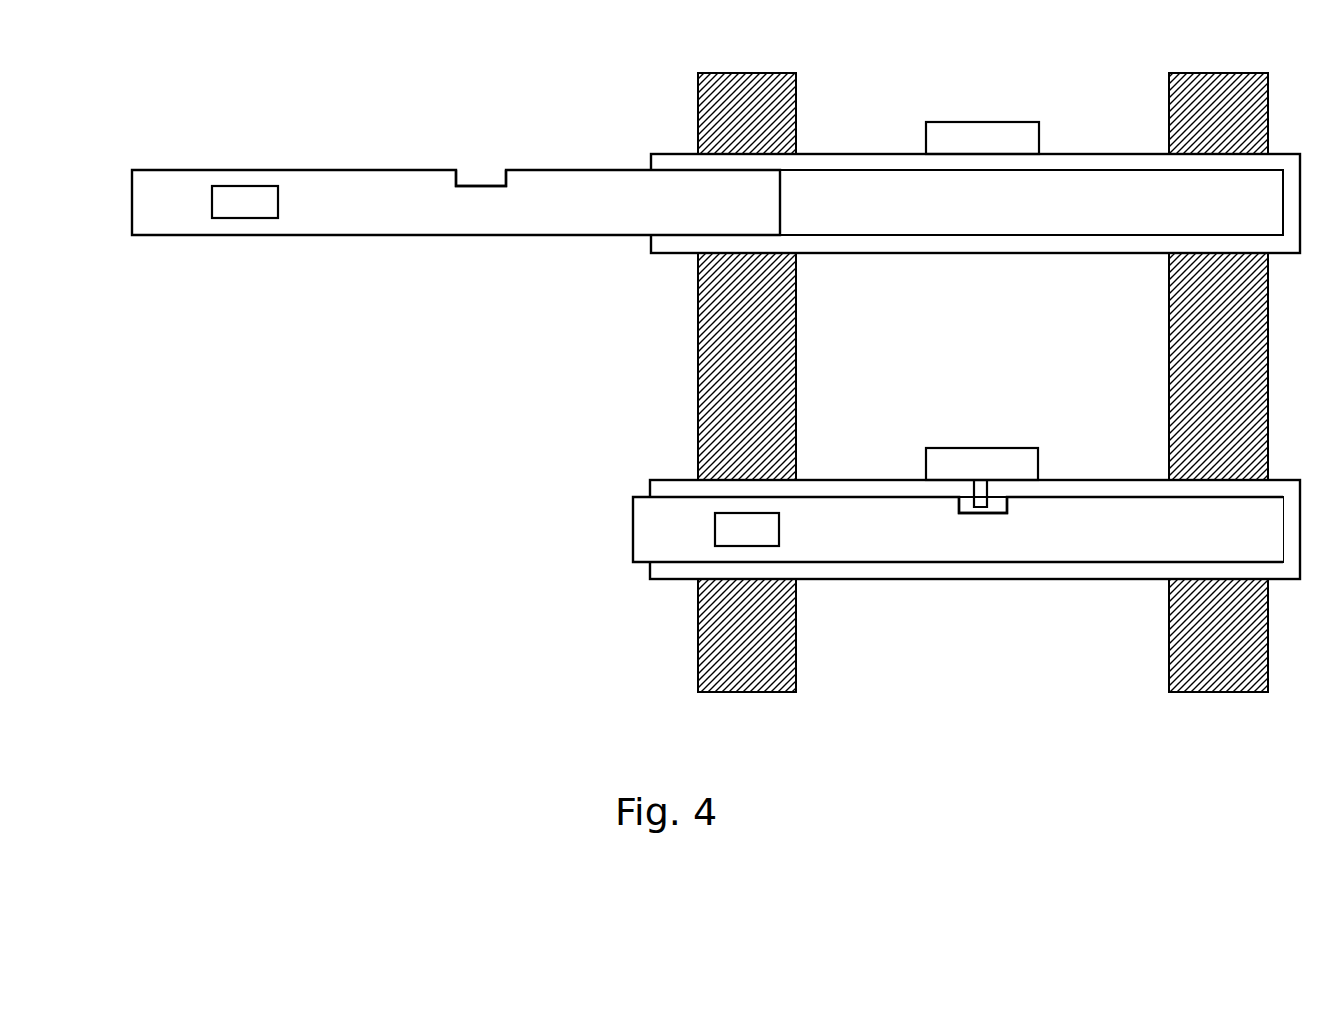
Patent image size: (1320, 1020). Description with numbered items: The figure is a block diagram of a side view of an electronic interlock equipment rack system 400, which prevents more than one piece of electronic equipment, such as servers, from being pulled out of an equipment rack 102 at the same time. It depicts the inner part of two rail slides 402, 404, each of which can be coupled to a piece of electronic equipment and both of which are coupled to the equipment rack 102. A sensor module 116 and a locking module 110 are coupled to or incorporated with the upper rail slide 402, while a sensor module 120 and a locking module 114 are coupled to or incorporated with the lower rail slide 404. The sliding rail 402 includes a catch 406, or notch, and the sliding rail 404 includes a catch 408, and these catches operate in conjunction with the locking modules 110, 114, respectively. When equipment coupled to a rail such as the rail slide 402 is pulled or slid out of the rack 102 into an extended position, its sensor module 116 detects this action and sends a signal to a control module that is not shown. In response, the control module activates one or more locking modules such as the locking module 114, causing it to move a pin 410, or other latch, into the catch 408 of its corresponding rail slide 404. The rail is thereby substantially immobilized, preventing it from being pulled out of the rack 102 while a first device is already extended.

The electronic interlock equipment rack system 400 is at (199, 64).
The equipment rack 102 is at (797, 318).
The locking module 110 is at (990, 137).
The locking module 114 is at (990, 464).
The sensor module 116 is at (245, 202).
The sensor module 120 is at (765, 530).
The rail slide 402 is at (648, 237).
The rail slide 404 is at (648, 562).
The catch 406 is at (490, 186).
The catch 408 is at (990, 514).
The pin 410 is at (975, 501).